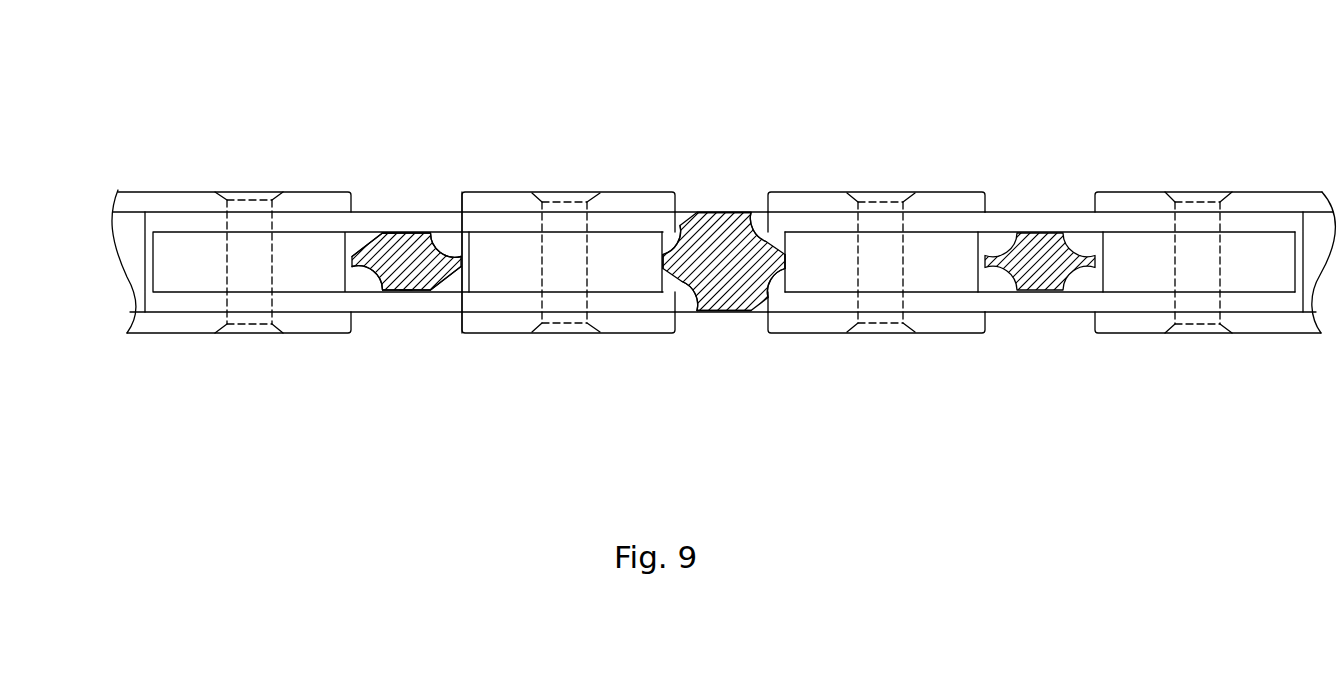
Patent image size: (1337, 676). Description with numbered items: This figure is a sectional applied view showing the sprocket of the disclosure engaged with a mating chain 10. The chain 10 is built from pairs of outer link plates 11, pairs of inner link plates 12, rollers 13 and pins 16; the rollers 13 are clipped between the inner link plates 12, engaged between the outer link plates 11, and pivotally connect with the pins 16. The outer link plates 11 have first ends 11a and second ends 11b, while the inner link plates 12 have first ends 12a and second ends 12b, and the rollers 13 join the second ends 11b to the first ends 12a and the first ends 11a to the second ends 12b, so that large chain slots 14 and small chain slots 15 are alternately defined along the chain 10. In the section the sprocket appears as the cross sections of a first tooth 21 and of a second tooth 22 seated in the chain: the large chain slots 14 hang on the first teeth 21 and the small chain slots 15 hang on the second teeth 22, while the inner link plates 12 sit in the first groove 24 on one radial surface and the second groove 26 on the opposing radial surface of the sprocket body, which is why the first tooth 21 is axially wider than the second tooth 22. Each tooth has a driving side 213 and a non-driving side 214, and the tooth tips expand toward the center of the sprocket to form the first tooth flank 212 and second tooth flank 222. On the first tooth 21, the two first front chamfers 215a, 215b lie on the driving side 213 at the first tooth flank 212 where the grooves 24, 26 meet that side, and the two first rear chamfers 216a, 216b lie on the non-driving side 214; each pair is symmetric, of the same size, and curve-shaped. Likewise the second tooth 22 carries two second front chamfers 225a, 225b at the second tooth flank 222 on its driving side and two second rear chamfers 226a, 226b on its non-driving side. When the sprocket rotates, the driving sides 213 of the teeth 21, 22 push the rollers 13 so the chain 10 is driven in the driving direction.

The chain 10 is at (1262, 182).
The outer link plates 11 is at (620, 192).
The first ends of the outer link plates 11a is at (482, 202).
The second ends of the outer link plates 11b is at (948, 199).
The inner link plates 12 is at (407, 210).
The first ends of the inner link plates 12a is at (175, 227).
The second ends of the inner link plates 12b is at (632, 227).
The rollers 13 is at (936, 275).
The large chain slots 14 is at (695, 212).
The small chain slots 15 is at (463, 287).
The pins 16 is at (883, 323).
The first teeth 21 is at (727, 300).
The first tooth flank 212 is at (730, 215).
The driving side 213 is at (786, 268).
The non-driving side 214 is at (662, 262).
The first front chamfer 215a is at (765, 287).
The first front chamfer 215b is at (776, 232).
The first rear chamfer 216a is at (683, 284).
The first rear chamfer 216b is at (680, 236).
The second teeth 22 is at (393, 291).
The second tooth flank 222 is at (417, 232).
The second front chamfer 225a is at (438, 283).
The second front chamfer 225b is at (443, 233).
The second rear chamfer 226a is at (372, 286).
The second rear chamfer 226b is at (376, 235).
The first groove 24 is at (402, 303).
The second groove 26 is at (387, 222).